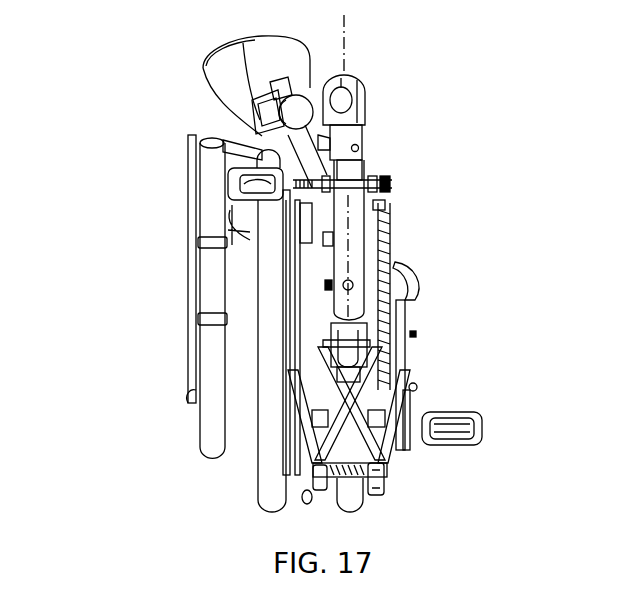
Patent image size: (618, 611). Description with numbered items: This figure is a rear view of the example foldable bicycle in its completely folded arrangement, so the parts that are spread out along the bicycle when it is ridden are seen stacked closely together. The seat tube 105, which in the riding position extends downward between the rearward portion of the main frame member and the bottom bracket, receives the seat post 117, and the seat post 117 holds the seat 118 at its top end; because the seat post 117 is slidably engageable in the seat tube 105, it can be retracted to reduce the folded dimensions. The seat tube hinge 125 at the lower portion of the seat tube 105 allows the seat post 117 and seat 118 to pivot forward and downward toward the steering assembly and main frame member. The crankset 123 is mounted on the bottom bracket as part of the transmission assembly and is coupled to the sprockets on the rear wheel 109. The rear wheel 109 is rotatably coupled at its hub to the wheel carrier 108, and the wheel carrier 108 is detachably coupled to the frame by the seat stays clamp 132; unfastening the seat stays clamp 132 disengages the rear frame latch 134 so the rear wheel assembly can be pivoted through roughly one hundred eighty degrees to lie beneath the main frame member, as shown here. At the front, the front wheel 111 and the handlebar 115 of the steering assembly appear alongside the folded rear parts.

The seat tube 105 is at (363, 278).
The wheel carrier 108 is at (300, 383).
The rear wheel 109 is at (363, 502).
The front wheel 111 is at (260, 448).
The handlebar 115 is at (200, 438).
The seat post 117 is at (300, 117).
The seat 118 is at (220, 97).
The crankset 123 is at (393, 257).
The seat tube hinge 125 is at (380, 88).
The seat stays clamp 132 is at (390, 184).
The rear frame latch 134 is at (388, 480).